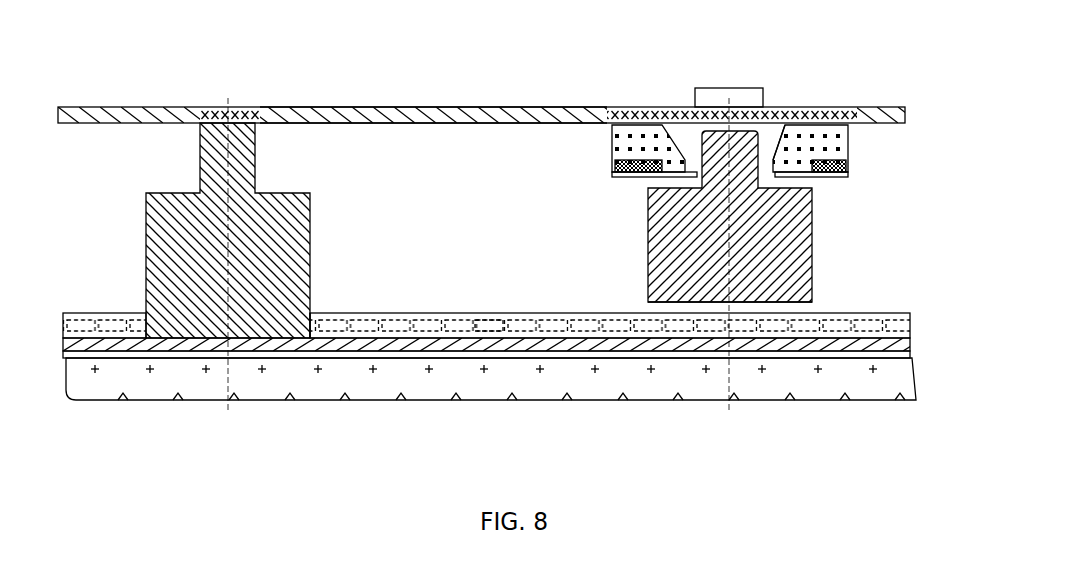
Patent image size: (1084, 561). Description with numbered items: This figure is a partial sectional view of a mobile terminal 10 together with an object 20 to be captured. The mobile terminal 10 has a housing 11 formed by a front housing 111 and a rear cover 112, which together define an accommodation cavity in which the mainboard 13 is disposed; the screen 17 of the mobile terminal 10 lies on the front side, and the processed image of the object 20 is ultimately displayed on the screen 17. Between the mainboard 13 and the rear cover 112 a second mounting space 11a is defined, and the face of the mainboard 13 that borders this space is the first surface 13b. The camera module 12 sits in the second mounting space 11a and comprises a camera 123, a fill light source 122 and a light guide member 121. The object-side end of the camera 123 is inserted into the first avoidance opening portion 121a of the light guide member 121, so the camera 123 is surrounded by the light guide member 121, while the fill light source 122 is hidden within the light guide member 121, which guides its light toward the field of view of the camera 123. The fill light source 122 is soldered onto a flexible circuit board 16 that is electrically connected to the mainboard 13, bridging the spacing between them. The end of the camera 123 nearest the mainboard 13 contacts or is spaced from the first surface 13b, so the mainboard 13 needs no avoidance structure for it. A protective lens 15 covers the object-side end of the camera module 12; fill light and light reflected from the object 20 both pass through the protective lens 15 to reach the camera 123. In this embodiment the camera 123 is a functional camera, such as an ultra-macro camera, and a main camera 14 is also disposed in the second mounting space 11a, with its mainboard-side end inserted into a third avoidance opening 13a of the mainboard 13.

The mobile terminal 10 is at (150, 415).
The housing 11 is at (345, 101).
The second mounting space 11a is at (411, 135).
The rear cover 112 is at (507, 107).
The camera module 12 is at (836, 256).
The light guide member 121 is at (848, 145).
The first avoidance opening portion 121a is at (776, 135).
The fill light source 122 is at (850, 168).
The camera 123 is at (765, 302).
The mainboard 13 is at (415, 318).
The third avoidance opening 13a is at (322, 312).
The first surface 13b is at (478, 314).
The main camera 14 is at (272, 303).
The protective lens 15 is at (638, 107).
The flexible circuit board 16 is at (843, 176).
The screen 17 is at (432, 351).
The front housing 111 is at (557, 358).
The object to be captured 20 is at (745, 88).